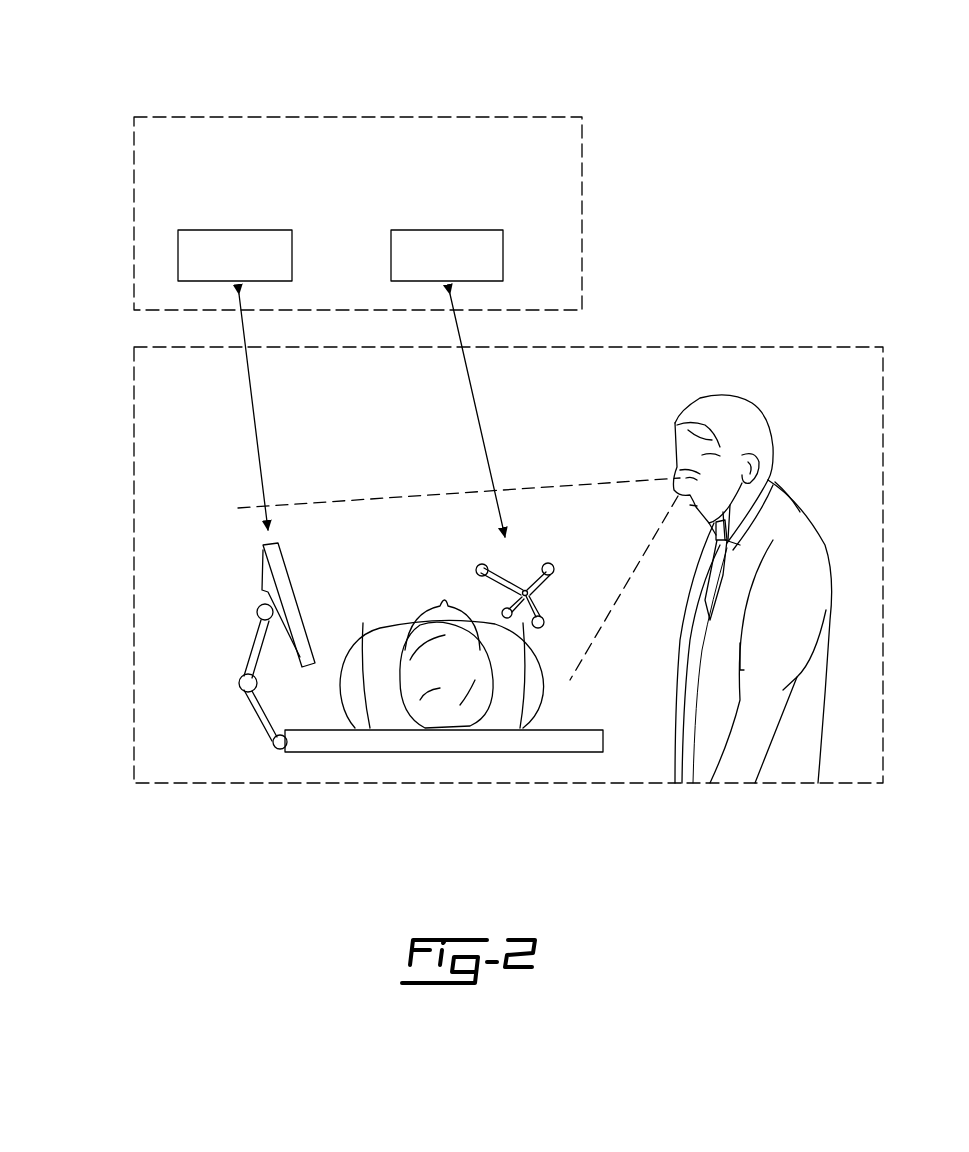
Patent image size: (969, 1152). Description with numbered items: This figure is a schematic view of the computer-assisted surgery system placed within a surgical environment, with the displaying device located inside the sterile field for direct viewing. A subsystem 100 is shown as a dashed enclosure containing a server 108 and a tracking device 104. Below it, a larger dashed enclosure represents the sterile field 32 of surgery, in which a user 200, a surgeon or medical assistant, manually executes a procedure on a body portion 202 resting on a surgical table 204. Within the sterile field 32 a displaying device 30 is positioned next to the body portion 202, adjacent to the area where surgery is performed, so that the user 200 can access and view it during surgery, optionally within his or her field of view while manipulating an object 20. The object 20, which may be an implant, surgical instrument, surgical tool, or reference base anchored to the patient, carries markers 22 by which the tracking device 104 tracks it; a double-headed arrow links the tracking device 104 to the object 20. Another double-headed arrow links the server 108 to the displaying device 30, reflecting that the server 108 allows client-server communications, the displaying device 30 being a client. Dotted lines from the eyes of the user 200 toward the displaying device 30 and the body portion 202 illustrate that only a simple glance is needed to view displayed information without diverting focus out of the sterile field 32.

The subsystem 100 is at (306, 108).
The tracking device 104 is at (448, 230).
The server 108 is at (203, 230).
The sterile field 32 is at (126, 563).
The displaying device 30 is at (268, 592).
The object 20 is at (547, 563).
The markers 22 is at (482, 564).
The user 200 is at (813, 502).
The body portion 202 is at (396, 612).
The surgical table 204 is at (448, 752).